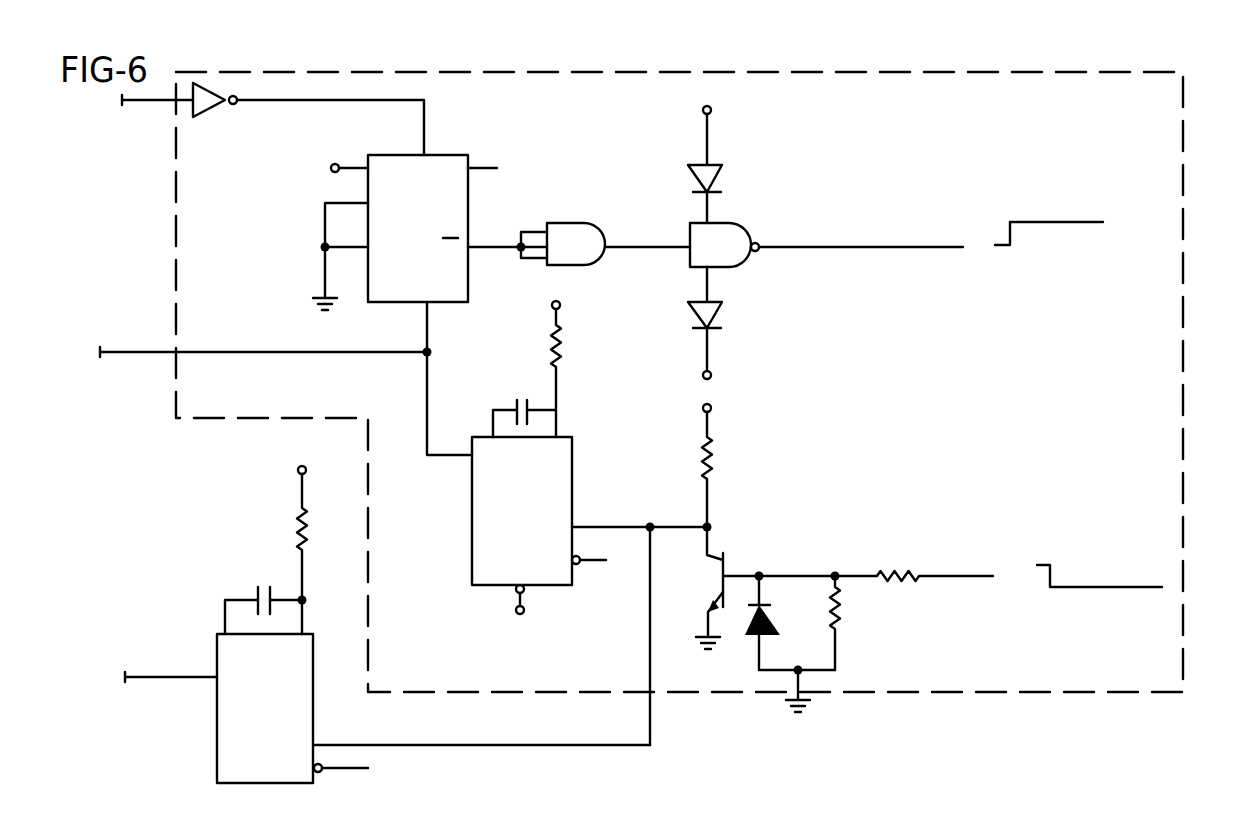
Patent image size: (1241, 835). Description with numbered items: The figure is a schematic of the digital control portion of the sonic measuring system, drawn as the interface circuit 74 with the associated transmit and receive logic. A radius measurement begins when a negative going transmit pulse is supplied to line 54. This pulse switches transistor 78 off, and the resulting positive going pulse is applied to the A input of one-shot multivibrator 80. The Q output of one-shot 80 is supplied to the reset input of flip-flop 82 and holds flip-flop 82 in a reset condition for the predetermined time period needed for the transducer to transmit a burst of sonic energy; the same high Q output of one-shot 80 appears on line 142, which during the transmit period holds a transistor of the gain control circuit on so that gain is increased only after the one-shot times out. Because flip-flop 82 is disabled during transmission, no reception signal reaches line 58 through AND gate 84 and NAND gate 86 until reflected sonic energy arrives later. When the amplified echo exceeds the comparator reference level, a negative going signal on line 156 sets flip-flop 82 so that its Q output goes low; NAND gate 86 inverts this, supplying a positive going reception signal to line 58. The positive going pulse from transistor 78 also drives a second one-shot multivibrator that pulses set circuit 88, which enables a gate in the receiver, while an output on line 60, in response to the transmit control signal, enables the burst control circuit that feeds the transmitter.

The output line 156 is at (122, 104).
The line 142 is at (208, 352).
The flip-flop 82 is at (453, 302).
The AND gate 84 is at (575, 223).
The NAND gate 86 is at (735, 223).
The line 58 is at (860, 252).
The interface circuit 74 is at (1185, 399).
The one-shot multivibrator 80 is at (572, 470).
The transistor 78 is at (733, 553).
The line 54 is at (971, 577).
The set circuit 88 is at (313, 718).
The line 60 is at (140, 677).